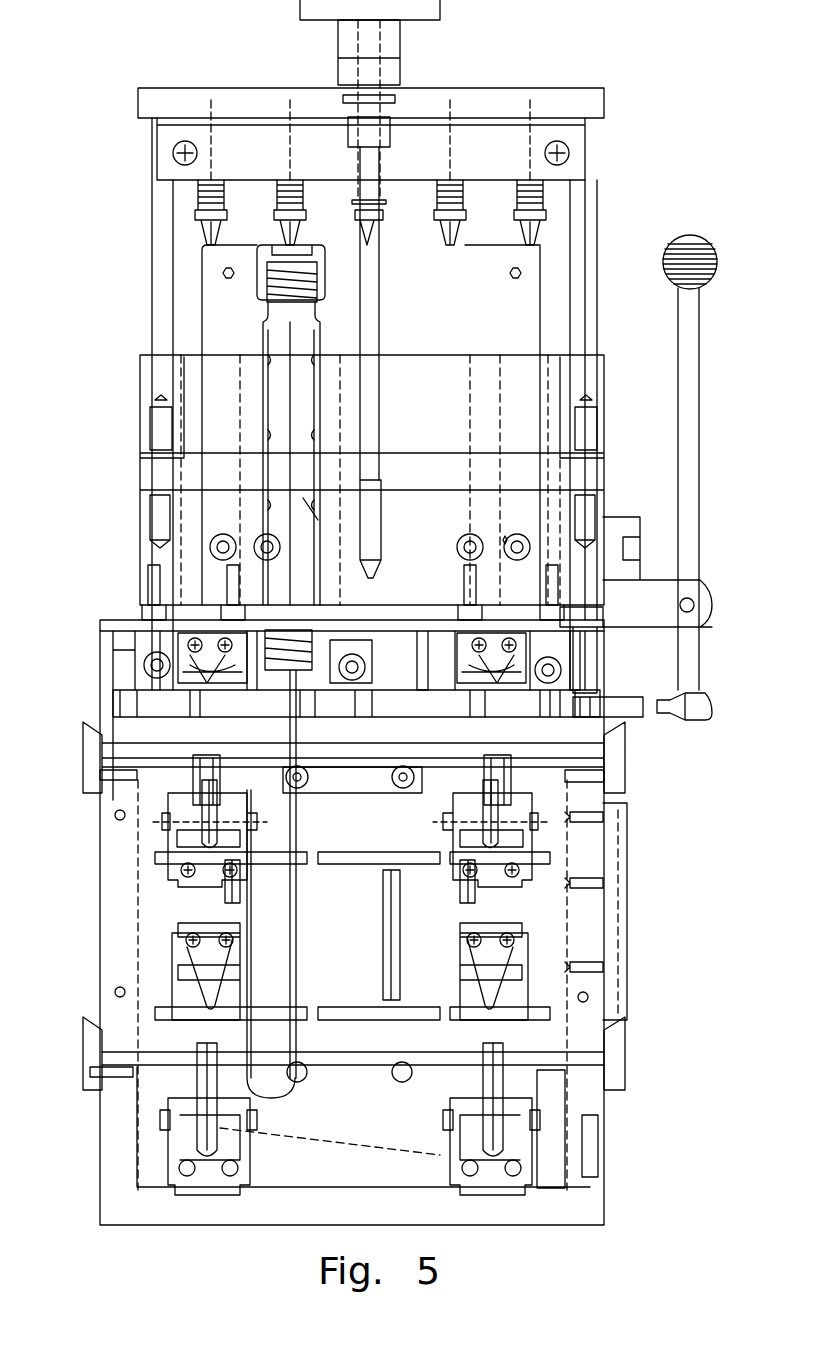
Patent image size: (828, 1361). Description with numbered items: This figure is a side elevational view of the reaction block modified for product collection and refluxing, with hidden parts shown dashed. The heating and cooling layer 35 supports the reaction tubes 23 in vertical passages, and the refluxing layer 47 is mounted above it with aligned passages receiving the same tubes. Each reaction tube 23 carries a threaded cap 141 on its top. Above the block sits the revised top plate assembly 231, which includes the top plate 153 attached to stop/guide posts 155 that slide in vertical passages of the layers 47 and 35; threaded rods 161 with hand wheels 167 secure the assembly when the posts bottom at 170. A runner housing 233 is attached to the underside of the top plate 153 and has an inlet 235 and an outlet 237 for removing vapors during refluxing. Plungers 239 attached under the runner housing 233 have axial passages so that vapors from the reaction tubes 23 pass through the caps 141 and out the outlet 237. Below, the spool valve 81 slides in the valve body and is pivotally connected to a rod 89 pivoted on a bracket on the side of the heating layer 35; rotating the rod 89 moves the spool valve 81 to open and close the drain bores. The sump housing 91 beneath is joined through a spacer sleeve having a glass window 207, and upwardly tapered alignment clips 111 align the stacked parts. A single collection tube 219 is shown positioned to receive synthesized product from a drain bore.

The reaction tube 23 is at (305, 328).
The heating and cooling layer 35 is at (150, 555).
The heating and cooling or refluxing layer 47 is at (140, 405).
The spool valve 81 is at (135, 710).
The rod 89 is at (690, 440).
The sump housing 91 is at (660, 592).
The upwardly tapered alignment clip 111 is at (100, 740).
The threaded cap 141 is at (325, 265).
The top plate 153 is at (492, 105).
The stop/guide post 155 is at (158, 320).
The threaded rod 161 is at (378, 290).
The hand wheel 167 is at (438, 0).
The bottom of stop/guide post passage 170 is at (150, 480).
The window 207 is at (590, 918).
The collection tube 219 is at (293, 968).
The revised top plate assembly 231 is at (250, 78).
The runner housing 233 is at (163, 143).
The inlet 235 is at (570, 162).
The outlet 237 is at (173, 160).
The plunger 239 is at (198, 238).